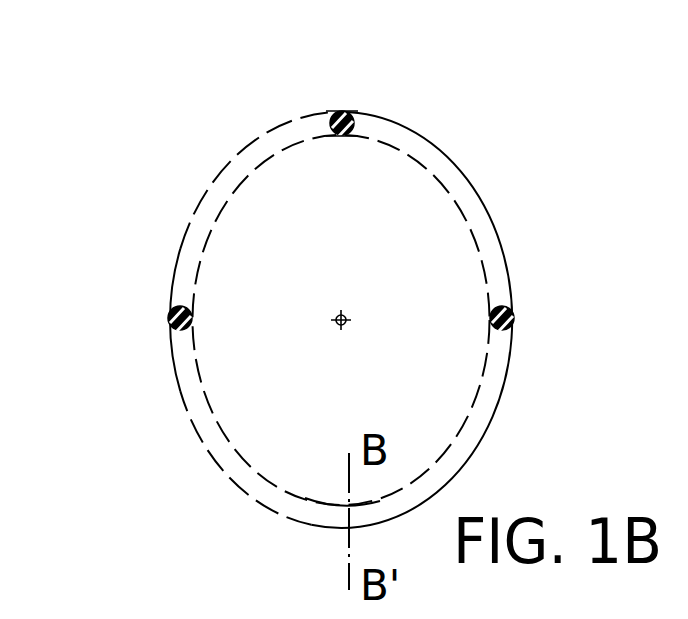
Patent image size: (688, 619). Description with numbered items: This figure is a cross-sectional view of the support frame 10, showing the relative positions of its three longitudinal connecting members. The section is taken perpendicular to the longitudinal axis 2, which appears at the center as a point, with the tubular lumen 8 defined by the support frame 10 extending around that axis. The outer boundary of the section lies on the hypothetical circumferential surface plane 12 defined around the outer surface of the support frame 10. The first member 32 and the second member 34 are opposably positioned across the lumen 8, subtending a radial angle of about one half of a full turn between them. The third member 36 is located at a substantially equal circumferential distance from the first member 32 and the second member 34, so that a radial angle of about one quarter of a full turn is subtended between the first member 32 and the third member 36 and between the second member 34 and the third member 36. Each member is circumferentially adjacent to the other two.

The longitudinal axis 2 is at (348, 316).
The tubular lumen 8 is at (258, 421).
The support frame 10 is at (133, 443).
The circumferential surface plane 12 is at (175, 375).
The first member 32 is at (170, 311).
The second member 34 is at (510, 307).
The third member 36 is at (352, 114).